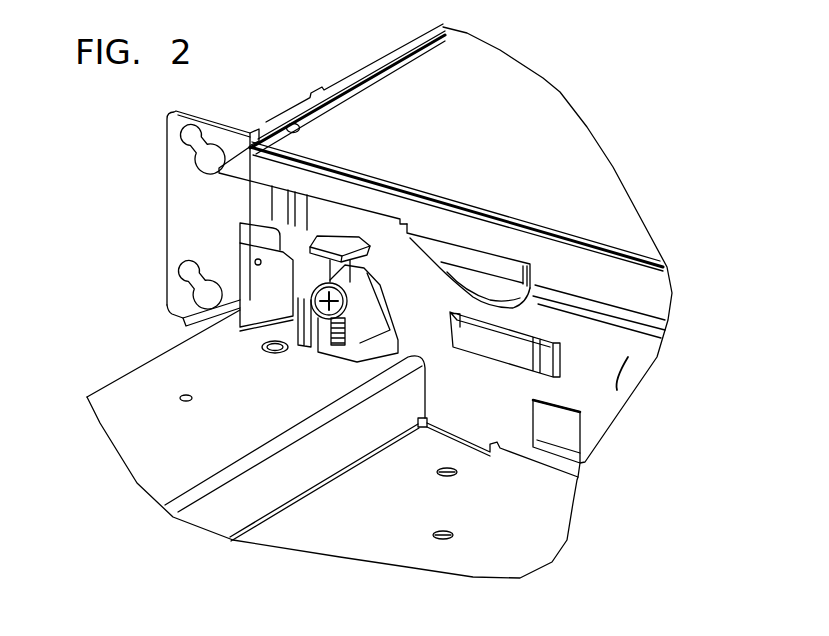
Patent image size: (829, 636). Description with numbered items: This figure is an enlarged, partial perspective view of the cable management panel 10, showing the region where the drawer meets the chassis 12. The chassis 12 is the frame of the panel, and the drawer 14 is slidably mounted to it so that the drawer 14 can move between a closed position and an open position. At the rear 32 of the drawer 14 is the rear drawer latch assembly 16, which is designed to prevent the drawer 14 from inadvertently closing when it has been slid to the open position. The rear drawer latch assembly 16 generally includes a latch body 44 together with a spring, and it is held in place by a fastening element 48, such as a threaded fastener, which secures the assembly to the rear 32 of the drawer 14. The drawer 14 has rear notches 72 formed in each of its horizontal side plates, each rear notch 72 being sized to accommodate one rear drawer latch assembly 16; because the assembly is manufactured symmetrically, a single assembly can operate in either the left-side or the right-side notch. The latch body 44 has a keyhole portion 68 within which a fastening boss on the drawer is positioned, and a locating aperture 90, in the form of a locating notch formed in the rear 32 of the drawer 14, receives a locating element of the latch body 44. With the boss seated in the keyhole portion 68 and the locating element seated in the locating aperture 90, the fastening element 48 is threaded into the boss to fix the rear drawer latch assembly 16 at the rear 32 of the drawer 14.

The cable management panel 10 is at (660, 165).
The chassis 12 is at (369, 99).
The drawer 14 is at (92, 377).
The rear drawer latch assembly 16 is at (388, 272).
The rear 32 is at (617, 390).
The latch body 44 is at (322, 312).
The fastening element 48 is at (338, 308).
The keyhole portion 68 is at (329, 320).
The rear notch 72 is at (284, 330).
The locating aperture 90 is at (374, 238).